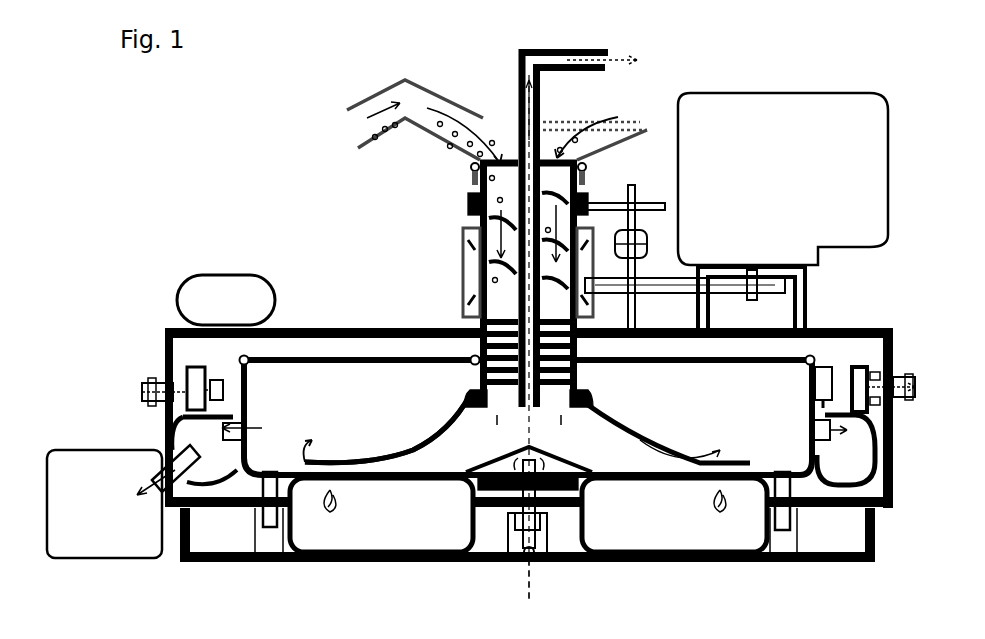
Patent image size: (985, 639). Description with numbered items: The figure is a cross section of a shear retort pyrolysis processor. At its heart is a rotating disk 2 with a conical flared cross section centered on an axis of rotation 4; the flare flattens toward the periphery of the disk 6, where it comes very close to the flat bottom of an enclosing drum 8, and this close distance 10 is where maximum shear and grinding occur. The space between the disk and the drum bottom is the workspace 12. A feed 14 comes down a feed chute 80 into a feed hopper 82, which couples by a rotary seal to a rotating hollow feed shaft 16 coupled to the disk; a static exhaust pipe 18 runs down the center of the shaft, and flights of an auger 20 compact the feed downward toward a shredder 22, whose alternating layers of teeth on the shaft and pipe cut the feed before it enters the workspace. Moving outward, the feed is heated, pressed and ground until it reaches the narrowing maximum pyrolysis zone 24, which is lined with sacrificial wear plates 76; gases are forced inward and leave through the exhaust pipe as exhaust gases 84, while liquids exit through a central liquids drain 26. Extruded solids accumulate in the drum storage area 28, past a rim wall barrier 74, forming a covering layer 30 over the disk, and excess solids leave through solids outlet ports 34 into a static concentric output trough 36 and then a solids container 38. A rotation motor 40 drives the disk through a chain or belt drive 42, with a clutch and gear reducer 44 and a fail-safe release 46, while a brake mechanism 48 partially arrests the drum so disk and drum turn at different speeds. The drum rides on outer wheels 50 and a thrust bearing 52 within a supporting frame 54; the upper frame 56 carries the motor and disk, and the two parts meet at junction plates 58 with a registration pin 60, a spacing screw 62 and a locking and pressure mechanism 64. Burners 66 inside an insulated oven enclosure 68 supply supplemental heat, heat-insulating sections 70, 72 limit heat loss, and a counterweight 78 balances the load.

The rotating disk 2 is at (600, 420).
The axis of rotation 4 is at (535, 590).
The periphery of the disk 6 is at (311, 438).
The enclosing drum 8 is at (393, 353).
The close distance 10 is at (332, 462).
The workspace 12 is at (425, 440).
The feed 14 is at (360, 128).
The rotating hollow feed shaft 16 is at (480, 222).
The static exhaust pipe 18 is at (517, 103).
The auger 20 is at (552, 190).
The shredder 22 is at (478, 364).
The maximum pyrolysis zone 24 is at (355, 456).
The central liquids drain 26 is at (508, 530).
The drum storage area 28 is at (778, 425).
The covering layer 30 is at (463, 298).
The solids outlet ports 34 is at (200, 420).
The static concentric output trough 36 is at (166, 447).
The solids container 38 is at (75, 460).
The rotation motor 40 is at (790, 198).
The chain or belt drive 42 is at (768, 287).
The clutch and gear reducer 44 is at (665, 280).
The fail-safe release 46 is at (648, 234).
The brake mechanism 48 is at (832, 370).
The outer wheels 50 is at (786, 516).
The thrust bearing 52 is at (585, 500).
The supporting frame 54 is at (893, 478).
The upper frame 56 is at (825, 330).
The junction plates 58 is at (912, 399).
The registration pin 60 is at (880, 416).
The spacing screw 62 is at (900, 366).
The locking and pressure mechanism 64 is at (866, 368).
The burners 66 is at (333, 510).
The insulated oven enclosure 68 is at (470, 513).
The heat-insulating section 70 is at (580, 396).
The heat-insulating section 72 is at (285, 476).
The rim wall barrier 74 is at (290, 455).
The sacrificial wear plates 76 is at (706, 462).
The counterweight 78 is at (222, 271).
The feed chute 80 is at (382, 90).
The feed hopper 82 is at (442, 150).
The exhaust gases 84 is at (617, 58).